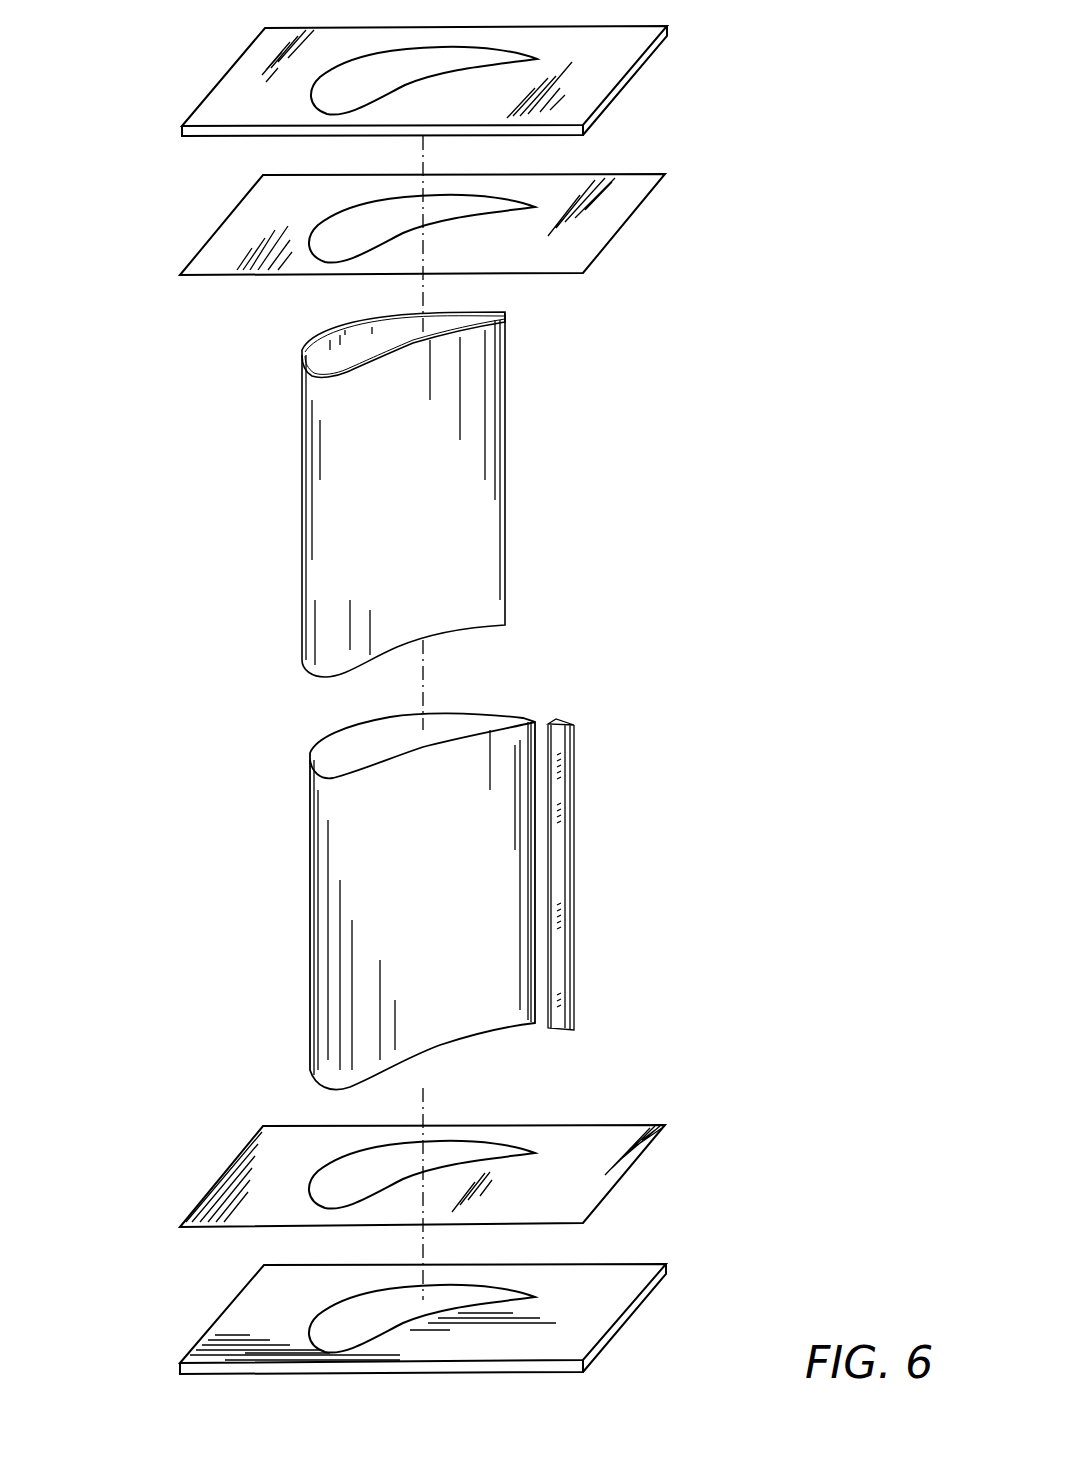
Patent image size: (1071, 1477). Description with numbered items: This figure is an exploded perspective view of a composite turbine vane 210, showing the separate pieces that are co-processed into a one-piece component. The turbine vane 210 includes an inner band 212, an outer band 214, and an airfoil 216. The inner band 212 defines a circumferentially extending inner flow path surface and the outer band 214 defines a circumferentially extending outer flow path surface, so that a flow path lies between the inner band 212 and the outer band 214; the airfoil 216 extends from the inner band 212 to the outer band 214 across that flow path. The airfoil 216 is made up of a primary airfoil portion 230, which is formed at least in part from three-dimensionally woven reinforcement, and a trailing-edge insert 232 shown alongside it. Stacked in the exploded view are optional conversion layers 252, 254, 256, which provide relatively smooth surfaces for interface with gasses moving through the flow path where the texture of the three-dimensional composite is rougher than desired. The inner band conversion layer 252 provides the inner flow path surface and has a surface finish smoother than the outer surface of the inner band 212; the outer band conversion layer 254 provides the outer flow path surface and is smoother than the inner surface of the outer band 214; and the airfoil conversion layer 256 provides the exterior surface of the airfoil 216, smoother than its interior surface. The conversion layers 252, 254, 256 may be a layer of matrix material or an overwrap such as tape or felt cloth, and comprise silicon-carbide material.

The turbine vane 210 is at (133, 80).
The inner band 212 is at (213, 1311).
The outer band 214 is at (198, 96).
The airfoil 216 is at (226, 848).
The primary airfoil portion 230 is at (335, 820).
The trailing-edge insert 232 is at (580, 870).
The inner band conversion layer 252 is at (206, 1178).
The outer band conversion layer 254 is at (243, 240).
The airfoil conversion layer 256 is at (330, 481).